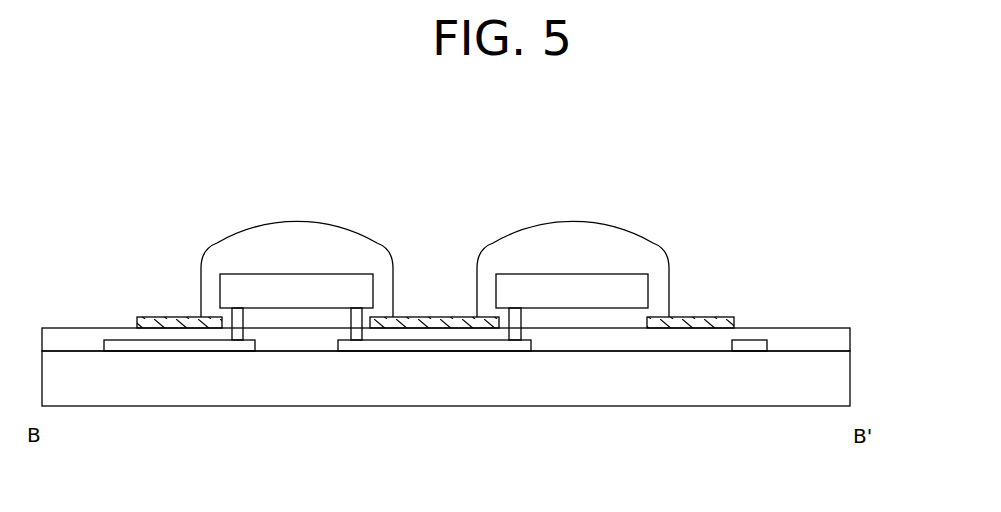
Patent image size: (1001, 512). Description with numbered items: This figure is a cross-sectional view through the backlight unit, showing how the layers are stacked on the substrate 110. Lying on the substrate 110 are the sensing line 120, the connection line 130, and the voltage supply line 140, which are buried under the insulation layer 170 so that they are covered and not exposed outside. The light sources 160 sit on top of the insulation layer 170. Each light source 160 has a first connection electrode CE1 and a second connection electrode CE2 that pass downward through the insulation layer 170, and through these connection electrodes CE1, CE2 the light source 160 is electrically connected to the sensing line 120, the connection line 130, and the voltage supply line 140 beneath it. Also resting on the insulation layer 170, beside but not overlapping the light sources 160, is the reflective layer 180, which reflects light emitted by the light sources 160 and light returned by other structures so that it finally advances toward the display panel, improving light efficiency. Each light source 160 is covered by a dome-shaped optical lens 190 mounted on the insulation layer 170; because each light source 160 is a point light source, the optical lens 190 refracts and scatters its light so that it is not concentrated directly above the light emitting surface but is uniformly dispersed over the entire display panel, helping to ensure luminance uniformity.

The substrate 110 is at (845, 380).
The insulation layer 170 is at (845, 335).
The sensing line 120 is at (750, 351).
The connection line 130 is at (433, 343).
The voltage supply line 140 is at (122, 343).
The first connection electrode CE1 is at (233, 350).
The second connection electrode CE2 is at (350, 343).
The light source 160 is at (290, 288).
The reflective layer 180 is at (428, 317).
The optical lens 190 is at (349, 245).